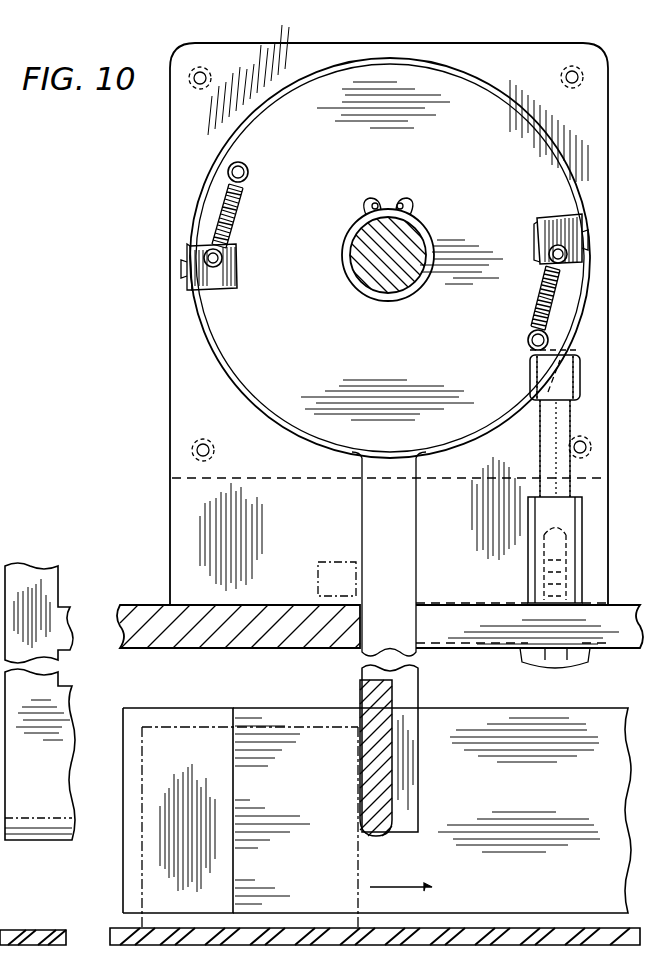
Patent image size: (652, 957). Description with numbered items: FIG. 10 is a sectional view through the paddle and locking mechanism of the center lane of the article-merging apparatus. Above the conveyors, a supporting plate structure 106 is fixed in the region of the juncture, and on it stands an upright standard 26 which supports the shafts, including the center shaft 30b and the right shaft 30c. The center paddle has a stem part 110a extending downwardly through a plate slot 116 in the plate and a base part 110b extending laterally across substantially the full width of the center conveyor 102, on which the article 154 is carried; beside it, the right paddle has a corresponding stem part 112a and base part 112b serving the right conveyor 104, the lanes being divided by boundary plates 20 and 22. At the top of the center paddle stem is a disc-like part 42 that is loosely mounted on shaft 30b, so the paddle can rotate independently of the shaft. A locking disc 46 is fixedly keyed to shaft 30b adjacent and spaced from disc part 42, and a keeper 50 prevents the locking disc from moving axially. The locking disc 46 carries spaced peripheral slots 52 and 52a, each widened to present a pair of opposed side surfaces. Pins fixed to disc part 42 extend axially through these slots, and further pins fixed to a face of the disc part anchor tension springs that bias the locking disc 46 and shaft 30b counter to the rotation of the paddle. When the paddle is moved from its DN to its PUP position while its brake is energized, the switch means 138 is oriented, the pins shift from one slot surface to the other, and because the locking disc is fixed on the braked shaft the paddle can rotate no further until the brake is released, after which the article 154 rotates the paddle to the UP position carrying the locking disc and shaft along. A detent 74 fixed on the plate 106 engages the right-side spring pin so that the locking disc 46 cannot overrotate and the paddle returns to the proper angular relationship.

The boundary plate 20 is at (212, 761).
The boundary plate 22 is at (589, 804).
The upright standard 26 is at (598, 68).
The shaft 30b is at (372, 270).
The shaft 30c is at (11, 195).
The disc-like part 42 is at (538, 236).
The locking disc 46 is at (332, 172).
The keeper 50 is at (416, 222).
The slot 52 is at (578, 242).
The slot 52a is at (195, 270).
The detent 74 is at (576, 372).
The conveyor 102 is at (310, 928).
The conveyor 104 is at (48, 930).
The supporting plate structure 106 is at (138, 618).
The stem part 110a is at (408, 774).
The base part 110b is at (380, 694).
The stem part 112a is at (40, 576).
The base part 112b is at (62, 698).
The plate slot 116 is at (500, 632).
The switch means 138 is at (332, 560).
The article 154 is at (305, 706).